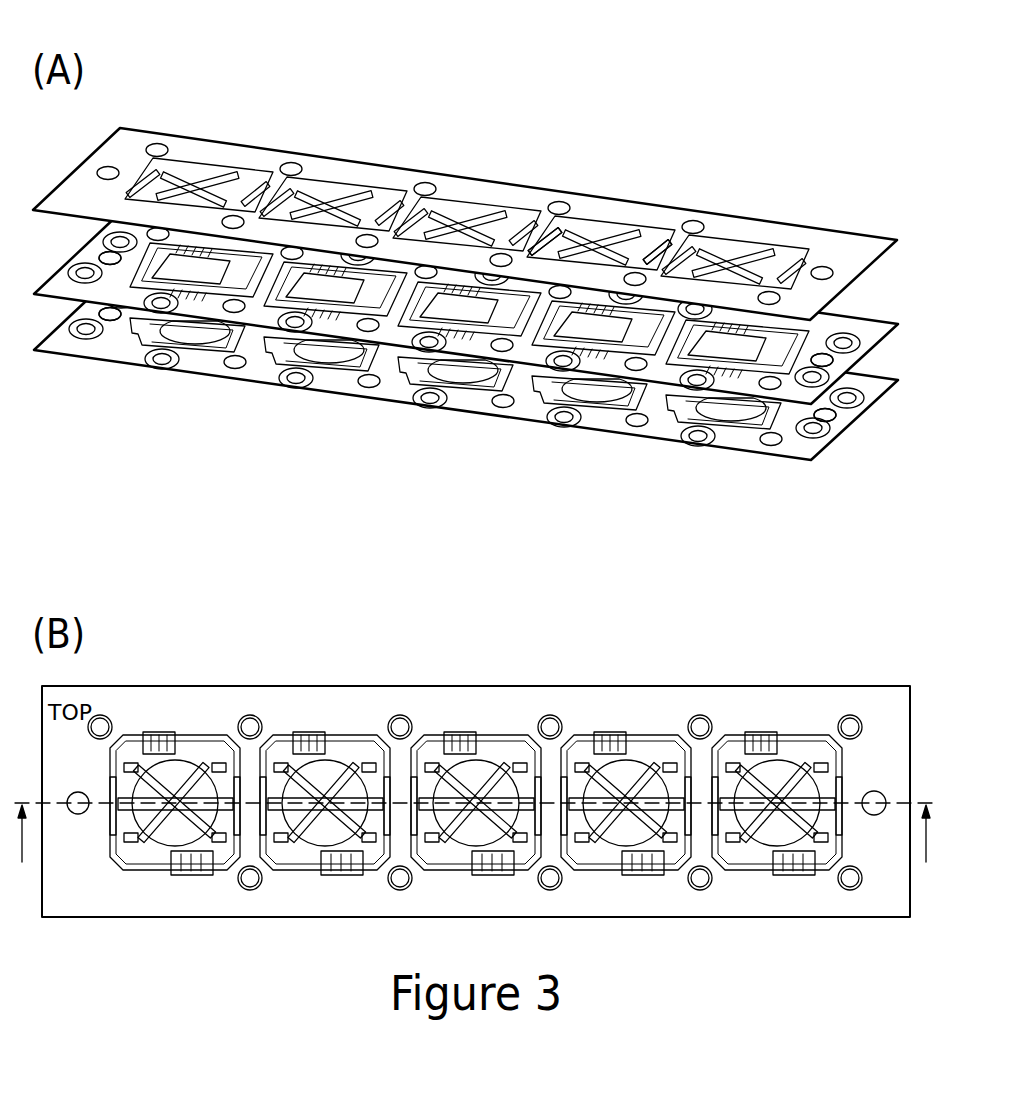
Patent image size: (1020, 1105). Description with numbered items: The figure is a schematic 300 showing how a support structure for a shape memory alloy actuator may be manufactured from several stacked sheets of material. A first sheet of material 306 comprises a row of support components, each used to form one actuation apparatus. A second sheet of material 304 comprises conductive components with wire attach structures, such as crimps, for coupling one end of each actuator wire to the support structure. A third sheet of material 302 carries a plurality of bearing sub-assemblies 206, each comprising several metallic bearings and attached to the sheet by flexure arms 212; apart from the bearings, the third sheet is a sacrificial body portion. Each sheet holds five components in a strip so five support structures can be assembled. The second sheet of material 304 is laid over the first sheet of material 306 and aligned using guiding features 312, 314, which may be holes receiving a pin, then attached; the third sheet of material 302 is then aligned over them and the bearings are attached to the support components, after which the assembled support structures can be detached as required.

In FIG. 3A, the schematic 300 is at (745, 160).
In FIG. 3A, the third sheet of material 302 is at (800, 232).
In FIG. 3A, the second sheet of material 304 is at (876, 326).
In FIG. 3A, the first sheet of material 306 is at (848, 409).
In FIG. 3A, the guiding feature 312 is at (106, 170).
In FIG. 3A, the guiding feature 314 is at (823, 271).
In FIG. 3A, the flexure arms 212 is at (553, 232).
In FIG. 3B, the flexure arms 212 is at (142, 795).
In FIG. 3A, the bearing sub-assembly 206 is at (598, 247).